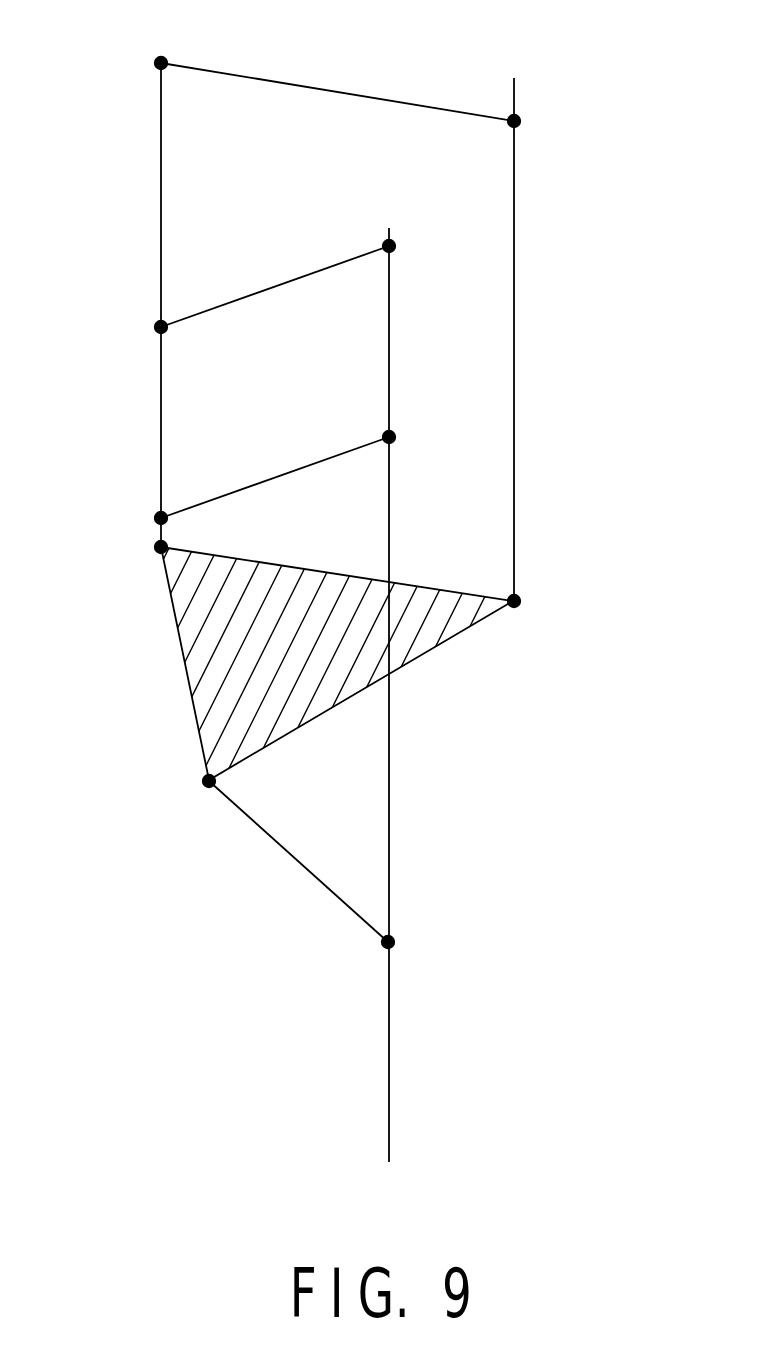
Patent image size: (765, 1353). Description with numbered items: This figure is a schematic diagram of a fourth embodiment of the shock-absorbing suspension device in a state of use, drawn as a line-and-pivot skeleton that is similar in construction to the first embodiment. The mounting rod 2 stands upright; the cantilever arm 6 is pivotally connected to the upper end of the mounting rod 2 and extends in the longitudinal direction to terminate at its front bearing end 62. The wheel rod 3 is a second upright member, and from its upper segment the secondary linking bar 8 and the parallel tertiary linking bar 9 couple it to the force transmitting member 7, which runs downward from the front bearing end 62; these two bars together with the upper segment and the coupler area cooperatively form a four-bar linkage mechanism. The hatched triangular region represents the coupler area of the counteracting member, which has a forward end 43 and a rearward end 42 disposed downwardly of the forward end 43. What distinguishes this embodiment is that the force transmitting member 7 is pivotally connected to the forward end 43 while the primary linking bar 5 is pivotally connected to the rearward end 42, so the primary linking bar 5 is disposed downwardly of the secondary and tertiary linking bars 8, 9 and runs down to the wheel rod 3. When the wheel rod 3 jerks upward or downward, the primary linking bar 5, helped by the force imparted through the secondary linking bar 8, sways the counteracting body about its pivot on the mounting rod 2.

The mounting rod 2 is at (514, 262).
The wheel rod 3 is at (389, 763).
The primary linking bar 5 is at (297, 862).
The cantilever arm 6 is at (341, 90).
The force transmitting member 7 is at (150, 215).
The secondary linking bar 8 is at (273, 477).
The tertiary linking bar 9 is at (240, 298).
The rearward end 42 is at (205, 784).
The forward end 43 is at (158, 548).
The front bearing end 62 is at (158, 64).